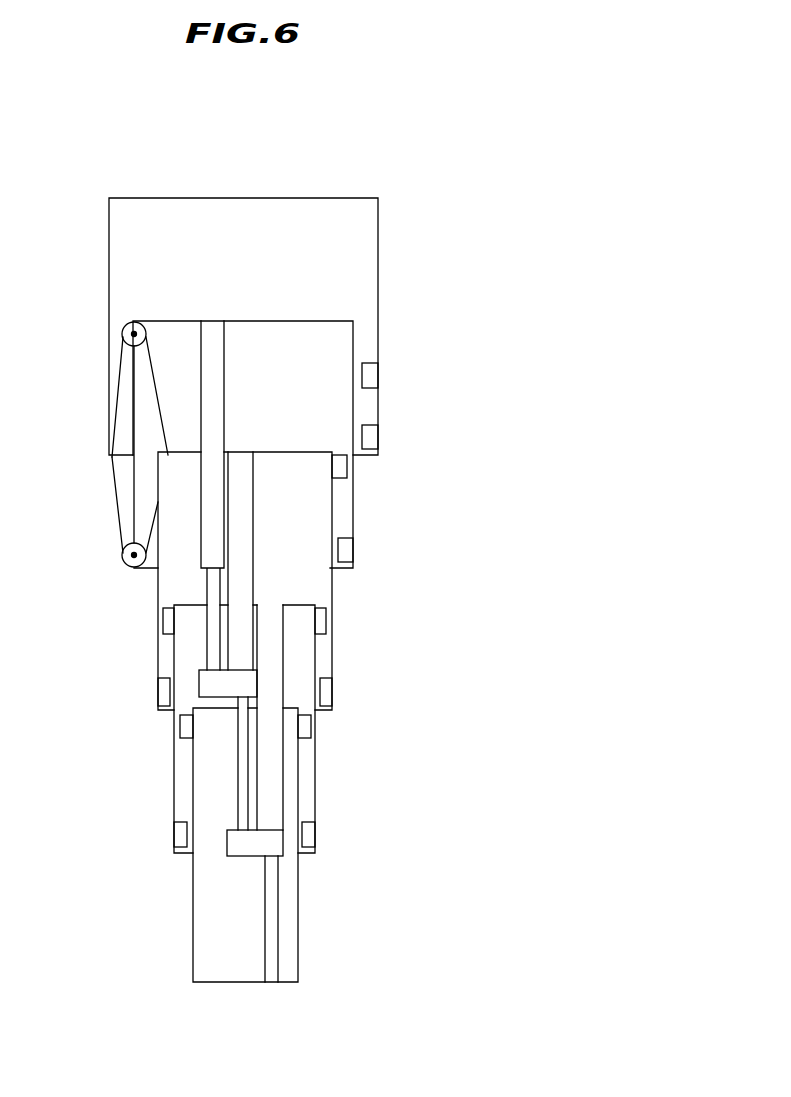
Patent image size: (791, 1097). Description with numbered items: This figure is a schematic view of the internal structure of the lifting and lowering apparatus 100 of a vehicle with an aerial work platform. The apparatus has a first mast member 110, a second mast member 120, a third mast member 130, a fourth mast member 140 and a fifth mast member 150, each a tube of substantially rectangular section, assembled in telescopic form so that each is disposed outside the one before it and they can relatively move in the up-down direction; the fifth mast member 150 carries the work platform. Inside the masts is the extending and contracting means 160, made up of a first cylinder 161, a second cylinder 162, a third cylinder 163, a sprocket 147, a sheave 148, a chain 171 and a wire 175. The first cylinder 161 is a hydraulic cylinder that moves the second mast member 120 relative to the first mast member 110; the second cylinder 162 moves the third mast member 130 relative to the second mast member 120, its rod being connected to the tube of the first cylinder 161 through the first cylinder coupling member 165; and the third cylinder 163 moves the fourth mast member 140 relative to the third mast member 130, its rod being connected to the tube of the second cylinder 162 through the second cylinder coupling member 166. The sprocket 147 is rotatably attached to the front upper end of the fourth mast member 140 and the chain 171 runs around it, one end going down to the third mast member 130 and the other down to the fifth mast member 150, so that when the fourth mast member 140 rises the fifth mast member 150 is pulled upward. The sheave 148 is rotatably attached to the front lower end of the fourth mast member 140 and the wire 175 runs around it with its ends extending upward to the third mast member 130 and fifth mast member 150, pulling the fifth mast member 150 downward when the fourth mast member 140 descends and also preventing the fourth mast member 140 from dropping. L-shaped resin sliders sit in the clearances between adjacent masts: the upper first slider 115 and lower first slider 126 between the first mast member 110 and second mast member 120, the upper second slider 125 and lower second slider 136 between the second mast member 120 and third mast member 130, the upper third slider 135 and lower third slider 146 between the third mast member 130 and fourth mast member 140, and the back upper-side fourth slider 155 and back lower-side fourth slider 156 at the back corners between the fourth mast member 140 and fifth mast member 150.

The lifting and lowering apparatus 100 is at (93, 191).
The first mast member 110 is at (192, 912).
The upper first slider 115 is at (305, 725).
The second mast member 120 is at (174, 772).
The upper second slider 125 is at (323, 620).
The lower first slider 126 is at (310, 833).
The third mast member 130 is at (158, 625).
The upper third slider 135 is at (340, 465).
The lower second slider 136 is at (328, 690).
The fourth mast member 140 is at (355, 512).
The lower third slider 146 is at (346, 548).
The sprocket 147 is at (124, 331).
The sheave 148 is at (124, 553).
The fifth mast member 150 is at (380, 320).
The back upper-side fourth slider 155 is at (369, 375).
The back lower-side fourth slider 156 is at (369, 437).
The extending and contracting means 160 is at (136, 292).
The first cylinder 161 is at (280, 757).
The second cylinder 162 is at (244, 506).
The third cylinder 163 is at (213, 380).
The first cylinder coupling member 165 is at (272, 845).
The second cylinder coupling member 166 is at (213, 681).
The chain 171 is at (117, 373).
The wire 175 is at (115, 500).